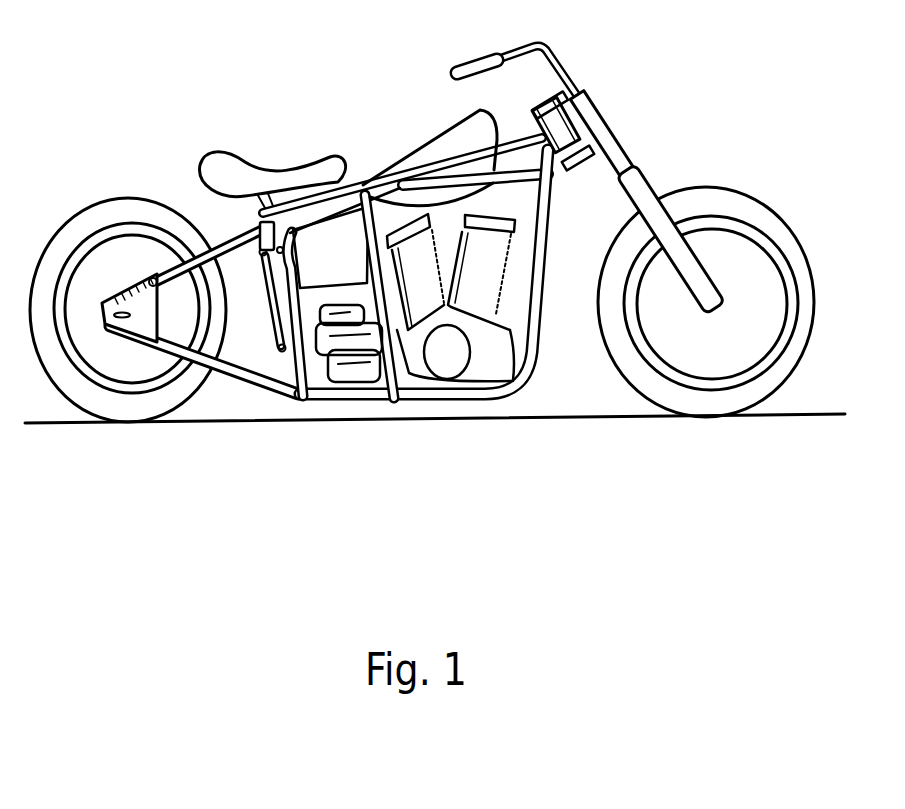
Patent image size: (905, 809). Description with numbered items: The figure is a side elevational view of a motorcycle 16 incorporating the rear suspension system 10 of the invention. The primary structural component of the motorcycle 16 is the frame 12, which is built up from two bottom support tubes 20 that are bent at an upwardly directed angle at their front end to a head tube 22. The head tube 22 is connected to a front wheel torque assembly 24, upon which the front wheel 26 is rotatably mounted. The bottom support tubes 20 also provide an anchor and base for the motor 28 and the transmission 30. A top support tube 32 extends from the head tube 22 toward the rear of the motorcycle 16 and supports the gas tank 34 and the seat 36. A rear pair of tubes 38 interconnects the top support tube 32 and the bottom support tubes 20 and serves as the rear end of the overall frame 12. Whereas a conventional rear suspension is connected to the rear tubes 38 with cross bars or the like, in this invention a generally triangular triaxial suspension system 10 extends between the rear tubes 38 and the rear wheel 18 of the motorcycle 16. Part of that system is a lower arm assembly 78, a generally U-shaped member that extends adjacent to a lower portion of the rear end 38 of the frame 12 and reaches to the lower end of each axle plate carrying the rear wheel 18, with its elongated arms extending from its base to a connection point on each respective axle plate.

The rear suspension system 10 is at (313, 427).
The frame 12 is at (525, 393).
The motorcycle 16 is at (258, 100).
The rear wheel 18 is at (80, 240).
The bottom support tubes 20 is at (373, 403).
The head tube 22 is at (565, 105).
The front wheel torque assembly 24 is at (608, 157).
The front wheel 26 is at (753, 220).
The motor 28 is at (460, 393).
The transmission 30 is at (330, 404).
The top support tube 32 is at (365, 183).
The gas tank 34 is at (428, 153).
The seat 36 is at (272, 160).
The rear pair of tubes 38 is at (287, 420).
The lower arm assembly 78 is at (236, 397).